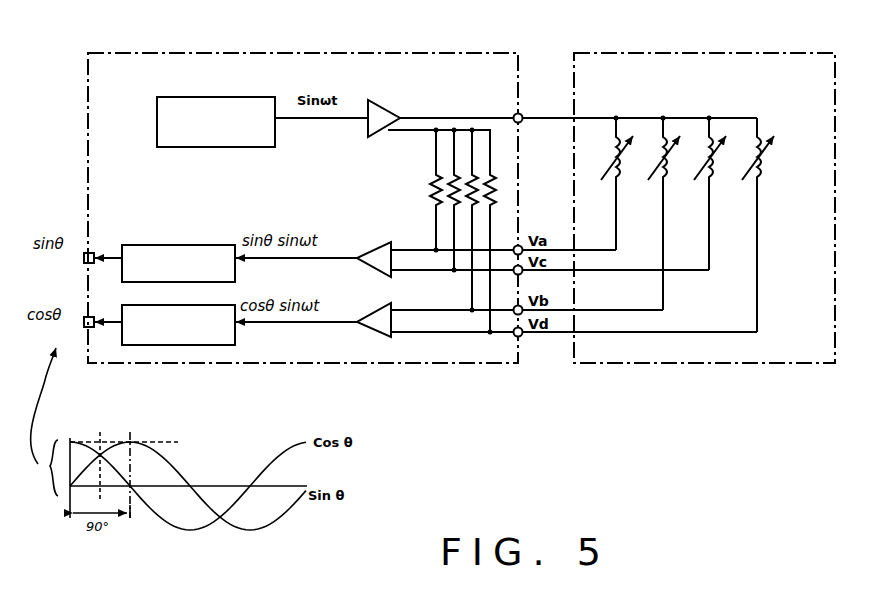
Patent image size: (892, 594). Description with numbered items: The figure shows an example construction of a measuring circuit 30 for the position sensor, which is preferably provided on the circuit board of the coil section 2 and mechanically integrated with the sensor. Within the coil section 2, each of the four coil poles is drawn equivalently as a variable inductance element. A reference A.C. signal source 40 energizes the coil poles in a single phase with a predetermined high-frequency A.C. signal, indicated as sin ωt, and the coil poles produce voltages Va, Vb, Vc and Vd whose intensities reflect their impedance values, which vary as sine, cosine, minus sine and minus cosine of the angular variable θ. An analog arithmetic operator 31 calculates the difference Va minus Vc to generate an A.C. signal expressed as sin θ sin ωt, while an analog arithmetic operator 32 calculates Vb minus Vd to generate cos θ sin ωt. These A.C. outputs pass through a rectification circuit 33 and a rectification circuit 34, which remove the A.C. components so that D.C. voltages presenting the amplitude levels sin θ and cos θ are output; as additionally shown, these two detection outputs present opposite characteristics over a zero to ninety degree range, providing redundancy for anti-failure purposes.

The measuring circuit 30 is at (405, 50).
The coil section 2 is at (746, 50).
The reference A.C. signal source 40 is at (206, 97).
The analog arithmetic operator 31 is at (372, 243).
The analog arithmetic operator 32 is at (372, 338).
The rectification circuit 33 is at (160, 245).
The rectification circuit 34 is at (164, 346).